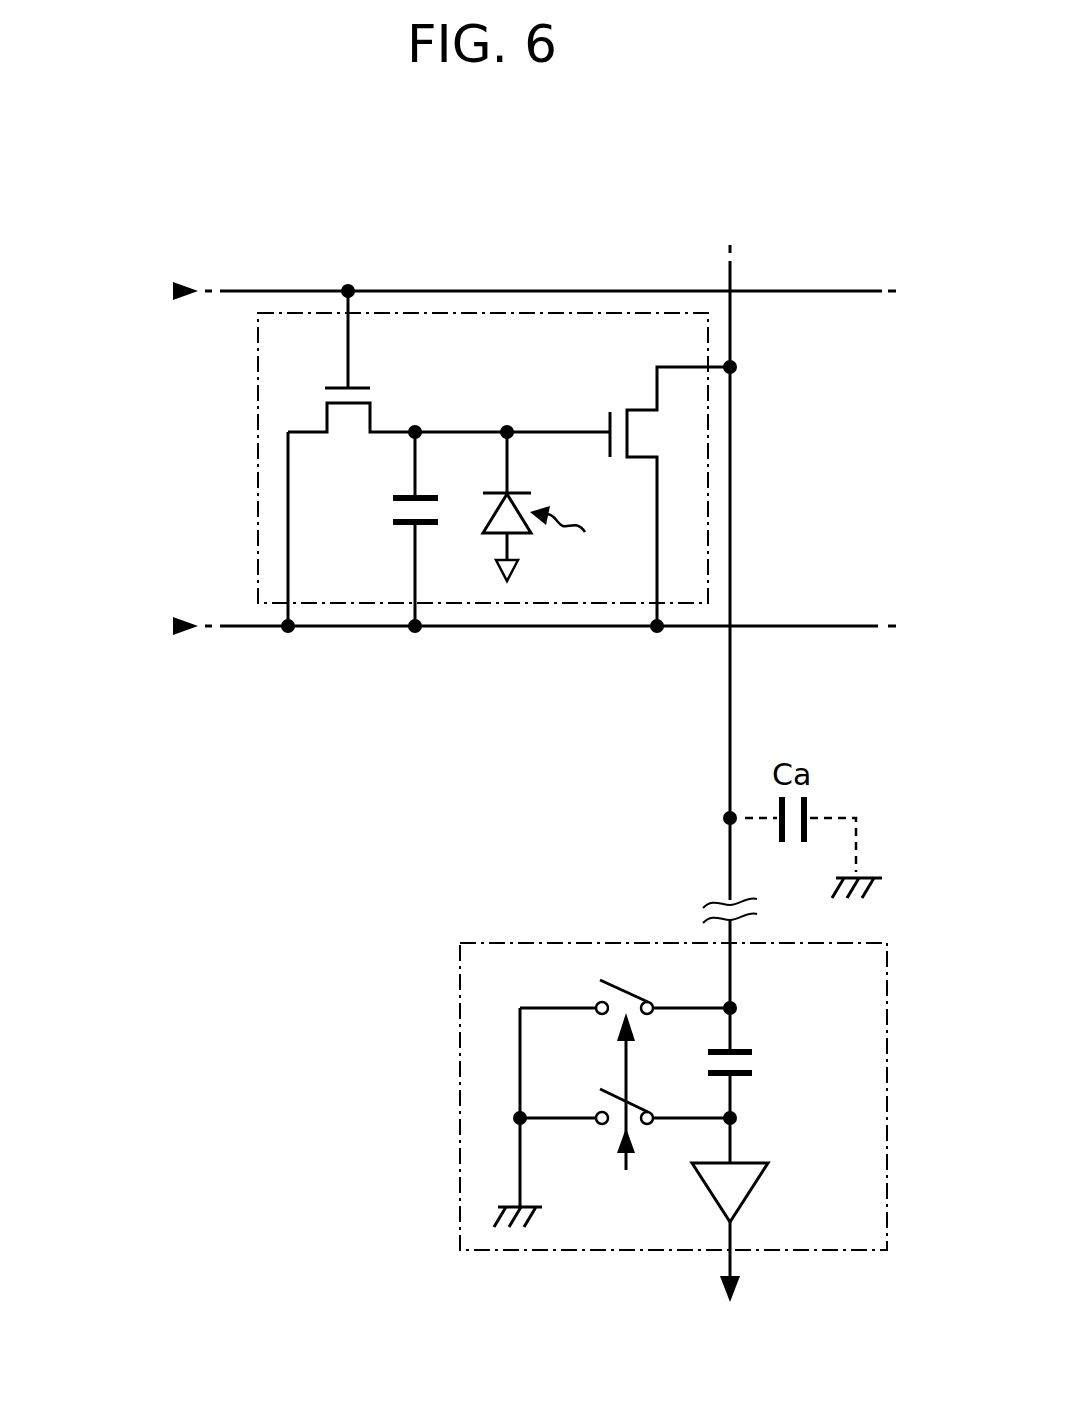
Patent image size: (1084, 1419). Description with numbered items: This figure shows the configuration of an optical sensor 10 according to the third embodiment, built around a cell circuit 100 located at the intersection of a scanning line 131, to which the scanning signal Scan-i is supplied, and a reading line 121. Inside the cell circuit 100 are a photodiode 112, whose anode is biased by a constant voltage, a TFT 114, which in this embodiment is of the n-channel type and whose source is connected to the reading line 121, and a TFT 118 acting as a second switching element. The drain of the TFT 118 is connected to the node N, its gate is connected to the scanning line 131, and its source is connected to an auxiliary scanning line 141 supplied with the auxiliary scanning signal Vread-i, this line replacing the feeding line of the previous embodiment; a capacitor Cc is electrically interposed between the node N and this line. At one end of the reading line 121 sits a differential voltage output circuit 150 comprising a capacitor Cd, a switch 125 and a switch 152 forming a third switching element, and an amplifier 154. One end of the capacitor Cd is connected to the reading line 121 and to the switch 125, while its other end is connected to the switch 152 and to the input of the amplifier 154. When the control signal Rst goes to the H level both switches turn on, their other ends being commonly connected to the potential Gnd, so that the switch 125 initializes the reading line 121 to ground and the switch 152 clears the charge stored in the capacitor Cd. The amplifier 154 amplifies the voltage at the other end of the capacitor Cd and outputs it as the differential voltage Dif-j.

The pixel photo-detection circuit 10 is at (657, 235).
The cell circuit 100 is at (258, 377).
The photodiode 112 is at (487, 516).
The TFT 114 is at (632, 410).
The TFT 118 is at (337, 425).
The reading line 121 is at (728, 700).
The switch 125 is at (601, 989).
The scanning line 131 is at (815, 291).
The auxiliary scanning line 141 is at (815, 629).
The differential voltage output circuit 150 is at (460, 1018).
The switch 152 is at (601, 1101).
The amplifier 154 is at (752, 1190).